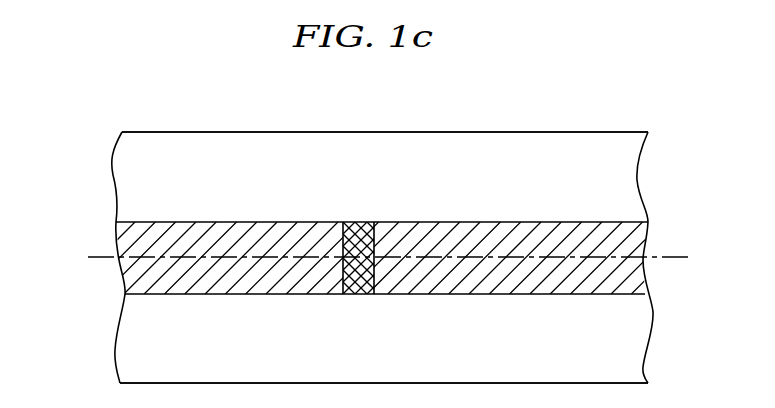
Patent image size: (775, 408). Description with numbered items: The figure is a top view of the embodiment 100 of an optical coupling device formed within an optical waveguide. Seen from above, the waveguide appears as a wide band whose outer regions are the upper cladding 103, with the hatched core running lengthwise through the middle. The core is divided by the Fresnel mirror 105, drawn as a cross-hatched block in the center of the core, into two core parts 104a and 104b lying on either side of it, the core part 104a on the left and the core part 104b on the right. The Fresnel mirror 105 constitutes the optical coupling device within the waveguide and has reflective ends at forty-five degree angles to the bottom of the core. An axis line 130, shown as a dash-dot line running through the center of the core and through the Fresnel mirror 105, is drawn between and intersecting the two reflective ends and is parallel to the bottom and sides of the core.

The embodiment 100 is at (377, 75).
The upper cladding 103 is at (509, 144).
The core part 104a is at (136, 272).
The core part 104b is at (637, 287).
The Fresnel mirror 105 is at (358, 221).
The axis line 130 is at (672, 257).